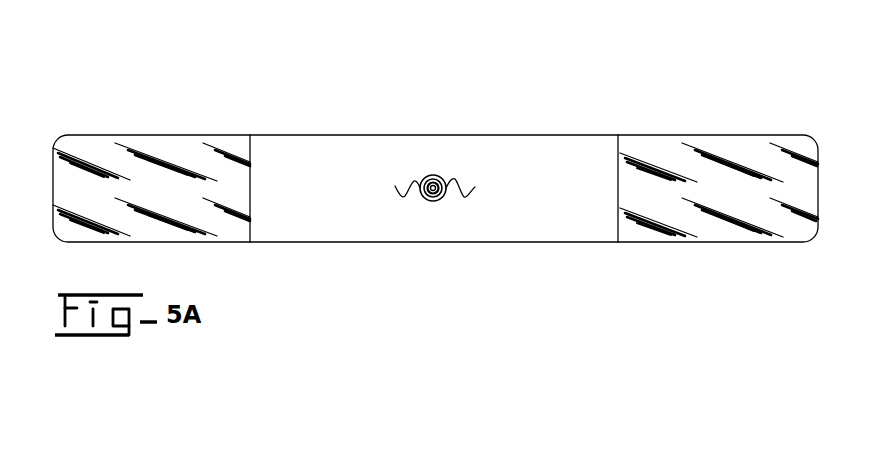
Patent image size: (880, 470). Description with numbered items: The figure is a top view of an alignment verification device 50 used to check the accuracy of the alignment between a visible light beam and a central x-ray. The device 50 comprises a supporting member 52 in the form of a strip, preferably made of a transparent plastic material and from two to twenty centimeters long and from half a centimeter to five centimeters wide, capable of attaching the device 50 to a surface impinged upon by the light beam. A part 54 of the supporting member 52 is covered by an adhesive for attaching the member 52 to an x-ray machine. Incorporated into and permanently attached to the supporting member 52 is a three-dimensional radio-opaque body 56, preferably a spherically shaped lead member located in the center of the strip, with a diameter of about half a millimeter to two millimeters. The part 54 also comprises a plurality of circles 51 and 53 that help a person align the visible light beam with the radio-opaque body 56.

The alignment verification device 50 is at (308, 100).
The circle 51 is at (476, 187).
The supporting member 52 is at (151, 163).
The circle 53 is at (392, 187).
The part 54 is at (675, 163).
The three-dimensional radio-opaque body 56 is at (420, 175).